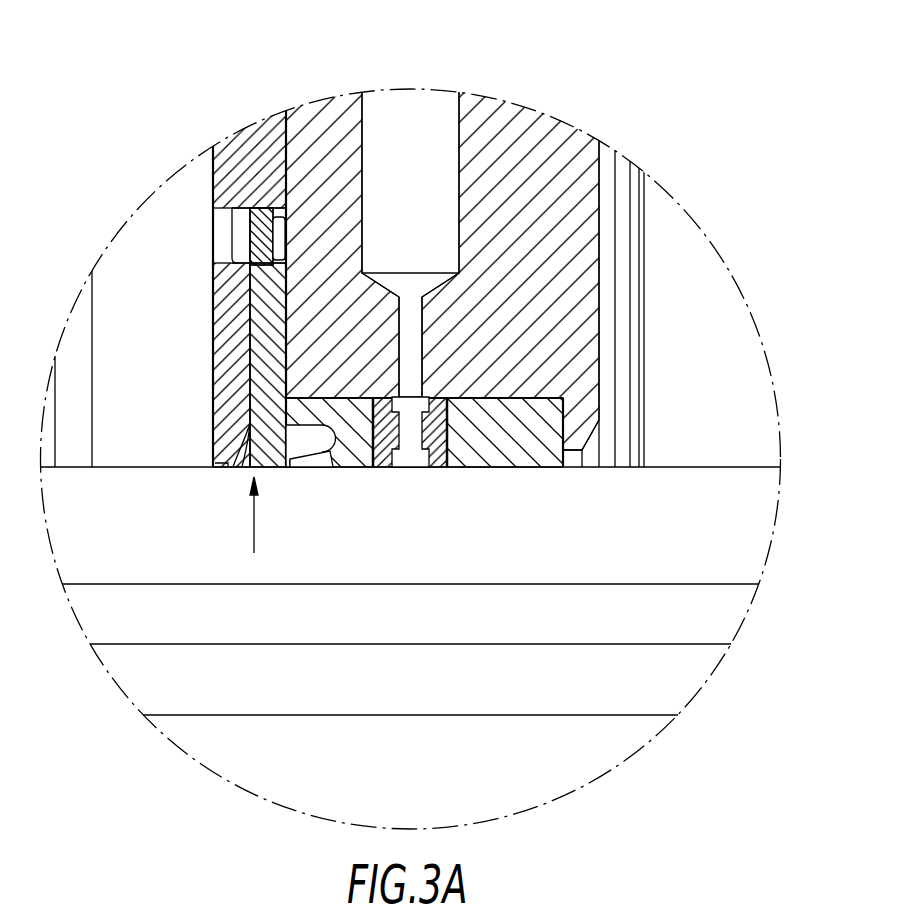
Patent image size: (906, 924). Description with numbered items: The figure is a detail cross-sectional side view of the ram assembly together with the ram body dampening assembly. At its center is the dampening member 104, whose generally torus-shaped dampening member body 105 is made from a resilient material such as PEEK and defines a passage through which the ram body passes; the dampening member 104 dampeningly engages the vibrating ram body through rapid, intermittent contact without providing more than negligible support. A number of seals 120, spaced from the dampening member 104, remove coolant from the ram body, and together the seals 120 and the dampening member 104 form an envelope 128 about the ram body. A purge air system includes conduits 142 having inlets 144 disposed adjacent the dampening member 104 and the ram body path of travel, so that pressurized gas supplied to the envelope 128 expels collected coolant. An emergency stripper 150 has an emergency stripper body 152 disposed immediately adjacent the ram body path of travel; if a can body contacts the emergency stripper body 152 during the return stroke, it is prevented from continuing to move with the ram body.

The dampening member 104 is at (636, 140).
The dampening member body 105 is at (533, 452).
The seals 120 is at (350, 445).
The envelope 128 is at (369, 372).
The conduits 142 is at (423, 112).
The inlets 144 is at (408, 450).
The emergency stripper 150 is at (253, 522).
The emergency stripper body 152 is at (274, 458).